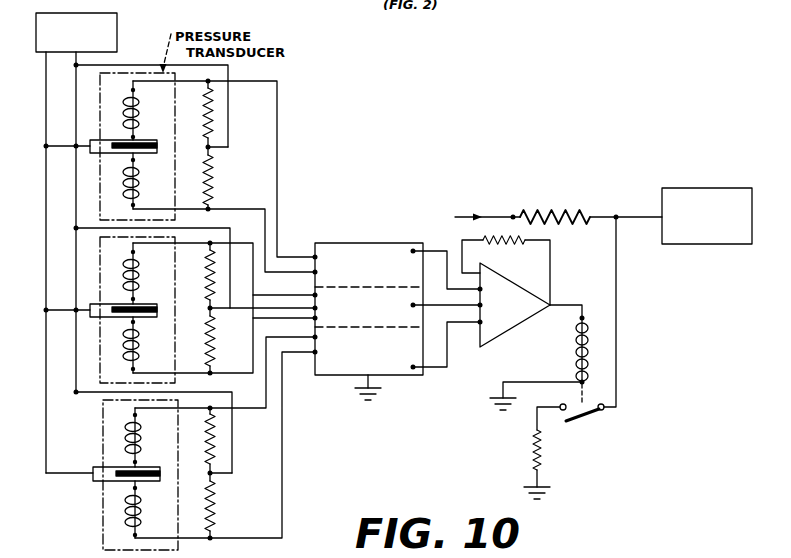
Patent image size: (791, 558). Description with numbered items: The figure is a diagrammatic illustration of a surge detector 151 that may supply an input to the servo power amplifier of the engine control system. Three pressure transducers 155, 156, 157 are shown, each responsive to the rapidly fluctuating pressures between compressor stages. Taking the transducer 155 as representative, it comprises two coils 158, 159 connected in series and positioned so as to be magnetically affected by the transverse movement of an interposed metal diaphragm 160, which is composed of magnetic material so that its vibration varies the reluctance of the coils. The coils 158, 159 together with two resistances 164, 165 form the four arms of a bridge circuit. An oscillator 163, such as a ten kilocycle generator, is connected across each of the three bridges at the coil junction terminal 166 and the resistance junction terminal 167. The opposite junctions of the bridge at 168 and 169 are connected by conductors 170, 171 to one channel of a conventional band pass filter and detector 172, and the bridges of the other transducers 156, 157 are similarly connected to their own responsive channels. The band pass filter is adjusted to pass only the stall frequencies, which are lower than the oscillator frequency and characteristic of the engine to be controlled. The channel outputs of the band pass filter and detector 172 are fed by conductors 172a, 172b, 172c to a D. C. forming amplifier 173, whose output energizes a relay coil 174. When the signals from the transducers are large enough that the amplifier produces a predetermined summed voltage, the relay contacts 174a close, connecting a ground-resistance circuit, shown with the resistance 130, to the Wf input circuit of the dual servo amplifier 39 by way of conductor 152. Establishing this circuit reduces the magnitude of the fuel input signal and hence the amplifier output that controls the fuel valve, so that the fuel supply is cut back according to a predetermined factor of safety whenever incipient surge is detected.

The oscillator 163 is at (118, 27).
The pressure transducer 155 is at (98, 91).
The pressure transducer 156 is at (98, 266).
The pressure transducer 157 is at (101, 508).
The coil 158 is at (139, 102).
The coil 159 is at (139, 172).
The metal diaphragm 160 is at (140, 141).
The coil junction terminal 166 is at (86, 145).
The resistance 164 is at (214, 112).
The resistance 165 is at (214, 176).
The resistance junction terminal 167 is at (213, 149).
The bridge junction 168 is at (210, 80).
The bridge junction 169 is at (212, 208).
The conductor 170 is at (279, 130).
The conductor 171 is at (265, 229).
The surge detector 151 is at (376, 200).
The band pass filter and detector 172 is at (370, 240).
The conductor 172a is at (436, 250).
The conductor 172b is at (466, 302).
The conductor 172c is at (433, 370).
The D. C. forming amplifier 173 is at (540, 271).
The resistor 130 is at (514, 216).
The conductor 152 is at (642, 215).
The dual servo amplifier 39 is at (718, 249).
The relay coil 174 is at (577, 352).
The relay contacts 174a is at (564, 421).